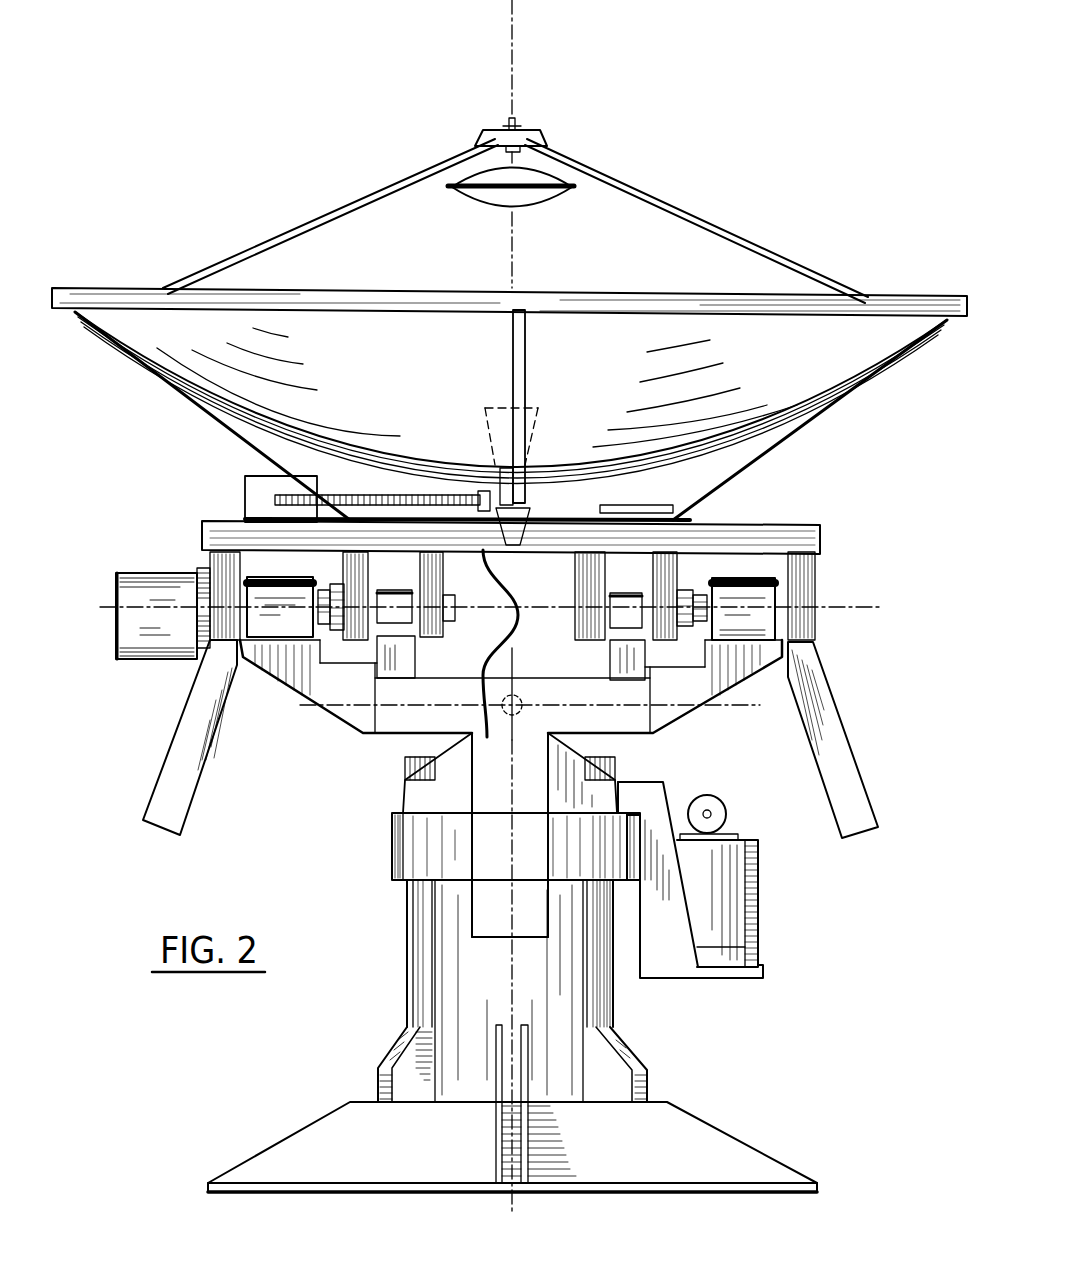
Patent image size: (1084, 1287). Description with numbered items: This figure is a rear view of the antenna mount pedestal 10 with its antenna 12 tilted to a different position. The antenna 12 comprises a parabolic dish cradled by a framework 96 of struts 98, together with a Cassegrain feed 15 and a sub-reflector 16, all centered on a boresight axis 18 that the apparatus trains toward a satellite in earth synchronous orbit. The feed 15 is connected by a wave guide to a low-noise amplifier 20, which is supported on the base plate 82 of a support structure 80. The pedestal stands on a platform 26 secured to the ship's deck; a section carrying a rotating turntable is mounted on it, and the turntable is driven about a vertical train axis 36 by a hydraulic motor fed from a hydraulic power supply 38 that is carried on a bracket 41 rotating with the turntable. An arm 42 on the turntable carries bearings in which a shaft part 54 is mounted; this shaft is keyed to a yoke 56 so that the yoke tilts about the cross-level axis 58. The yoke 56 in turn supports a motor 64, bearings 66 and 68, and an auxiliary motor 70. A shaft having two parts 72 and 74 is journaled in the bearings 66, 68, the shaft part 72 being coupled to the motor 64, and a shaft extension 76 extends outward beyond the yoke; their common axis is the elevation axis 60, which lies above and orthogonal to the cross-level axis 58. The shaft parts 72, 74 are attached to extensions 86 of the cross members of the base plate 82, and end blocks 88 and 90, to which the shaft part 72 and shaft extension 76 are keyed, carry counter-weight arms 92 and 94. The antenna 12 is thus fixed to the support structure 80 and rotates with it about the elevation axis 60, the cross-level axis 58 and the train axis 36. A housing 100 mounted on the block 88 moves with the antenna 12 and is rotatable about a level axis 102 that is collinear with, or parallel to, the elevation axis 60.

The antenna mount pedestal 10 is at (362, 877).
The antenna 12 is at (270, 236).
The Cassegrain feed 15 is at (487, 432).
The sub-reflector 16 is at (486, 203).
The boresight axis 18 is at (519, 264).
The low-noise amplifier 20 is at (247, 498).
The platform 26 is at (304, 1110).
The train axis 36 is at (510, 955).
The hydraulic power supply 38 is at (760, 907).
The bracket 41 is at (653, 982).
The arm 42 is at (405, 797).
The shaft part 54 is at (524, 706).
The yoke 56 is at (355, 712).
The cross-level axis 58 is at (490, 738).
The elevation axis 60 is at (540, 605).
The motor 64 is at (308, 564).
The bearing 66 is at (398, 592).
The bearing 68 is at (624, 593).
The auxiliary motor 70 is at (758, 582).
The shaft part 72 is at (445, 600).
The shaft part 74 is at (582, 615).
The shaft extension 76 is at (242, 578).
The support structure 80 is at (750, 518).
The base plate 82 is at (210, 538).
The extensions of cross members 86 is at (352, 640).
The end block 88 is at (235, 556).
The end block 90 is at (805, 588).
The counter-weight arm 92 is at (190, 815).
The counter-weight arm 94 is at (860, 778).
The framework 96 is at (163, 392).
The struts 98 is at (232, 425).
The housing 100 is at (180, 568).
The level axis 102 is at (105, 566).